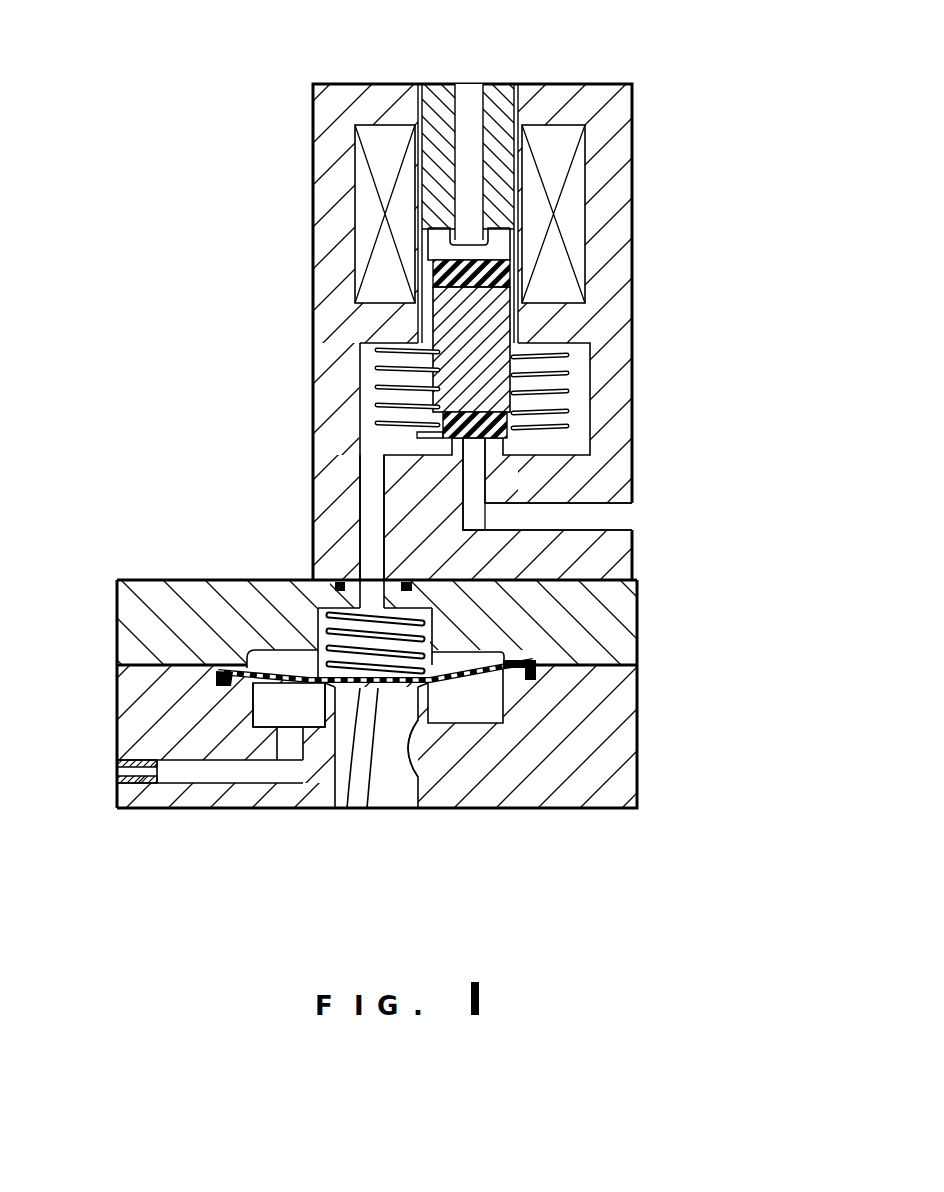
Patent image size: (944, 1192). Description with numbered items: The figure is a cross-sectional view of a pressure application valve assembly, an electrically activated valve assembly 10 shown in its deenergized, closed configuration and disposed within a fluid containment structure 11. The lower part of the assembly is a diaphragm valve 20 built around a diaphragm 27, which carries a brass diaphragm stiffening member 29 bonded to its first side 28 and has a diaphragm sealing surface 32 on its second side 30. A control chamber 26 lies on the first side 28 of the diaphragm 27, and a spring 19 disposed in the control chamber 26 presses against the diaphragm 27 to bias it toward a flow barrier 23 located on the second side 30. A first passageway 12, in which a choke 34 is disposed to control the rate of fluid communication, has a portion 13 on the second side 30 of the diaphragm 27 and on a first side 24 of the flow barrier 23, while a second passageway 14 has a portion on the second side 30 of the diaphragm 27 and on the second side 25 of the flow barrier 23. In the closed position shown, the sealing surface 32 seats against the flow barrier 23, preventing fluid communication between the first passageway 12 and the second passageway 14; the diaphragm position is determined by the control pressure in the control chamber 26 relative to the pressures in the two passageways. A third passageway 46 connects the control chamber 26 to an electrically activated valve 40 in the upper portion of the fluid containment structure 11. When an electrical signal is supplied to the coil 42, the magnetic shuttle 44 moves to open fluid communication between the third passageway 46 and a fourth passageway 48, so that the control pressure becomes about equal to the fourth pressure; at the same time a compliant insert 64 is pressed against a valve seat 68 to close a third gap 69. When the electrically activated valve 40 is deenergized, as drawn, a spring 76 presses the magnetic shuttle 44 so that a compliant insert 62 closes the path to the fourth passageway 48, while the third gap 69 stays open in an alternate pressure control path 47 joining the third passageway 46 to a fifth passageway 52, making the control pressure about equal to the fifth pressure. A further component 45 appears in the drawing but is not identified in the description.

The electrically activated valve assembly 10 is at (213, 247).
The fluid containment structure 11 is at (634, 453).
The first passageway 12 is at (197, 772).
The portion of first passageway 13 is at (452, 716).
The second passageway 14 is at (378, 773).
The spring 19 is at (445, 607).
The diaphragm valve 20 is at (658, 714).
The flow barrier 23 is at (322, 710).
The first side of flow barrier 24 is at (450, 713).
The second side of flow barrier 25 is at (450, 712).
The control chamber 26 is at (432, 640).
The diaphragm 27 is at (265, 668).
The first side of diaphragm 28 is at (310, 676).
The diaphragm stiffening member 29 is at (535, 663).
The second side of diaphragm 30 is at (365, 760).
The diaphragm sealing surface 32 is at (342, 700).
The choke 34 is at (118, 768).
The electrically activated valve 40 is at (642, 184).
The coil 42 is at (382, 128).
The magnetic shuttle 44 is at (495, 315).
The plunger body 45 is at (507, 278).
The third passageway 46 is at (370, 597).
The alternate pressure control path 47 is at (422, 320).
The fourth passageway 48 is at (617, 513).
The fifth passageway 52 is at (468, 92).
The compliant insert 62 is at (435, 420).
The compliant insert 64 is at (448, 257).
The valve seat 68 is at (512, 243).
The third gap 69 is at (490, 232).
The spring 76 is at (555, 365).